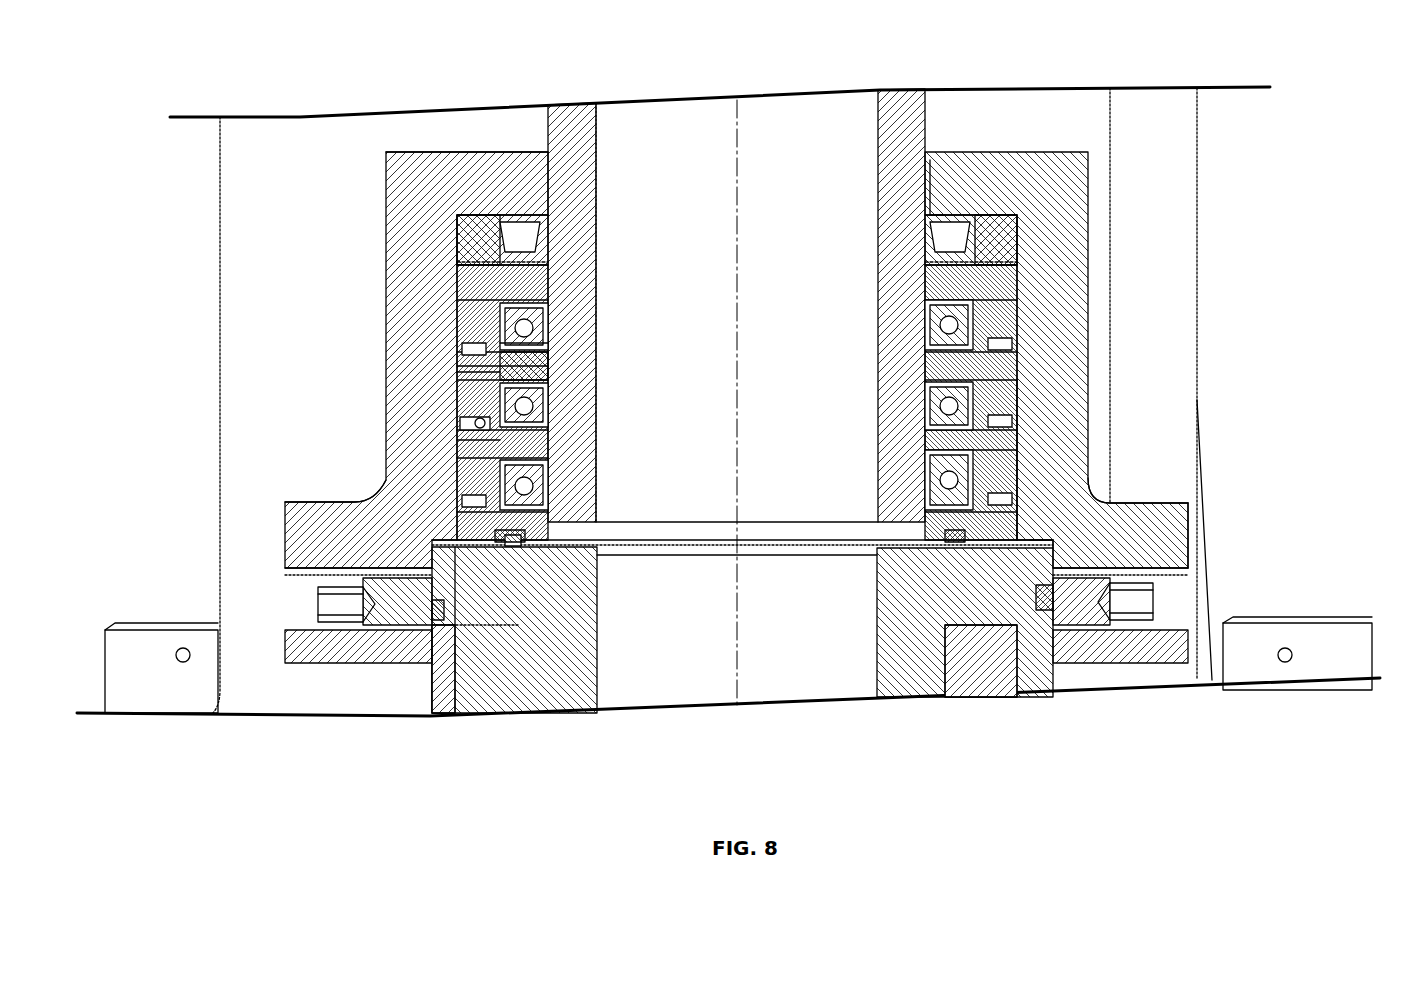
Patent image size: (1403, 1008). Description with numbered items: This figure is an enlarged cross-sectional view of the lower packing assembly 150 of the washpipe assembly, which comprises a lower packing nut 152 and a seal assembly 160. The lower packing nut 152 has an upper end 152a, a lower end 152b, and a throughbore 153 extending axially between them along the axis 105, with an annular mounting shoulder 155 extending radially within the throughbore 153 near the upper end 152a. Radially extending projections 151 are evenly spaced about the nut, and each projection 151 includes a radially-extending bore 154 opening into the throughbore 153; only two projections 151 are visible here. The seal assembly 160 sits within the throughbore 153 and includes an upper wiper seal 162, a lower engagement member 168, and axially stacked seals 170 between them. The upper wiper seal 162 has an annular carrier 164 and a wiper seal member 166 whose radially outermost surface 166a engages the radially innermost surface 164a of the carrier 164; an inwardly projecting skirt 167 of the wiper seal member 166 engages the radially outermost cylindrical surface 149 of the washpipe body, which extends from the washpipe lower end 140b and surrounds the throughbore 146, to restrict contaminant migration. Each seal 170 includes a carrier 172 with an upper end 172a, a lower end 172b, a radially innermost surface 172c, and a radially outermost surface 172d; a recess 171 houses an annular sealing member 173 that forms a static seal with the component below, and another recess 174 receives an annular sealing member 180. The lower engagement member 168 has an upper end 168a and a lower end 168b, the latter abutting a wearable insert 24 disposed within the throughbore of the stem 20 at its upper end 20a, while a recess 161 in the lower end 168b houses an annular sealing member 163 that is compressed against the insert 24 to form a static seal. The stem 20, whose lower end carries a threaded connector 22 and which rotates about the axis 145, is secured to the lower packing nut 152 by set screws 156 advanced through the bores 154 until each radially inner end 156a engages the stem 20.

The stem 20 is at (1053, 680).
The upper end of stem 20a is at (1050, 545).
The threaded connector 22 is at (1198, 312).
The wearable insert 24 is at (597, 612).
The axis 105 is at (796, 402).
The axis of rotation 145 is at (735, 128).
The lower end of washpipe 140b is at (814, 548).
The throughbore of washpipe 146 is at (598, 148).
The radially outermost cylindrical surface 149 is at (548, 115).
The lower packing assembly 150 is at (1152, 245).
The projections 151 is at (285, 515).
The lower packing nut 152 is at (383, 275).
The upper end of lower packing nut 152a is at (456, 148).
The lower end of lower packing nut 152b is at (362, 668).
The throughbore of lower packing nut 153 is at (932, 178).
The radially-extending bore 154 is at (290, 578).
The annular mounting shoulder 155 is at (1000, 240).
The set screws 156 is at (318, 600).
The radially inner end of set screw 156a is at (435, 620).
The seal assembly 160 is at (896, 343).
The recess 161 is at (512, 545).
The upper wiper seal 162 is at (922, 240).
The annular sealing member 163 is at (520, 545).
The annular carrier 164 is at (465, 245).
The radially innermost surface of carrier 164a is at (990, 262).
The wiper seal member 166 is at (500, 235).
The radially outermost surface of wiper seal member 166a is at (985, 255).
The inwardly projecting skirt 167 is at (545, 257).
The lower engagement member 168 is at (922, 518).
The upper end of lower engagement member 168a is at (1020, 452).
The lower end of lower engagement member 168b is at (1000, 548).
The seals 170 is at (922, 310).
The recess 171 is at (462, 423).
The carrier 172 is at (452, 355).
The upper end of carrier 172a is at (530, 343).
The lower end of carrier 172b is at (455, 445).
The radially innermost surface of carrier 172c is at (452, 376).
The radially outermost surface of carrier 172d is at (548, 365).
The annular sealing member 173 is at (484, 424).
The recess 174 is at (512, 385).
The annular sealing member 180 is at (552, 315).